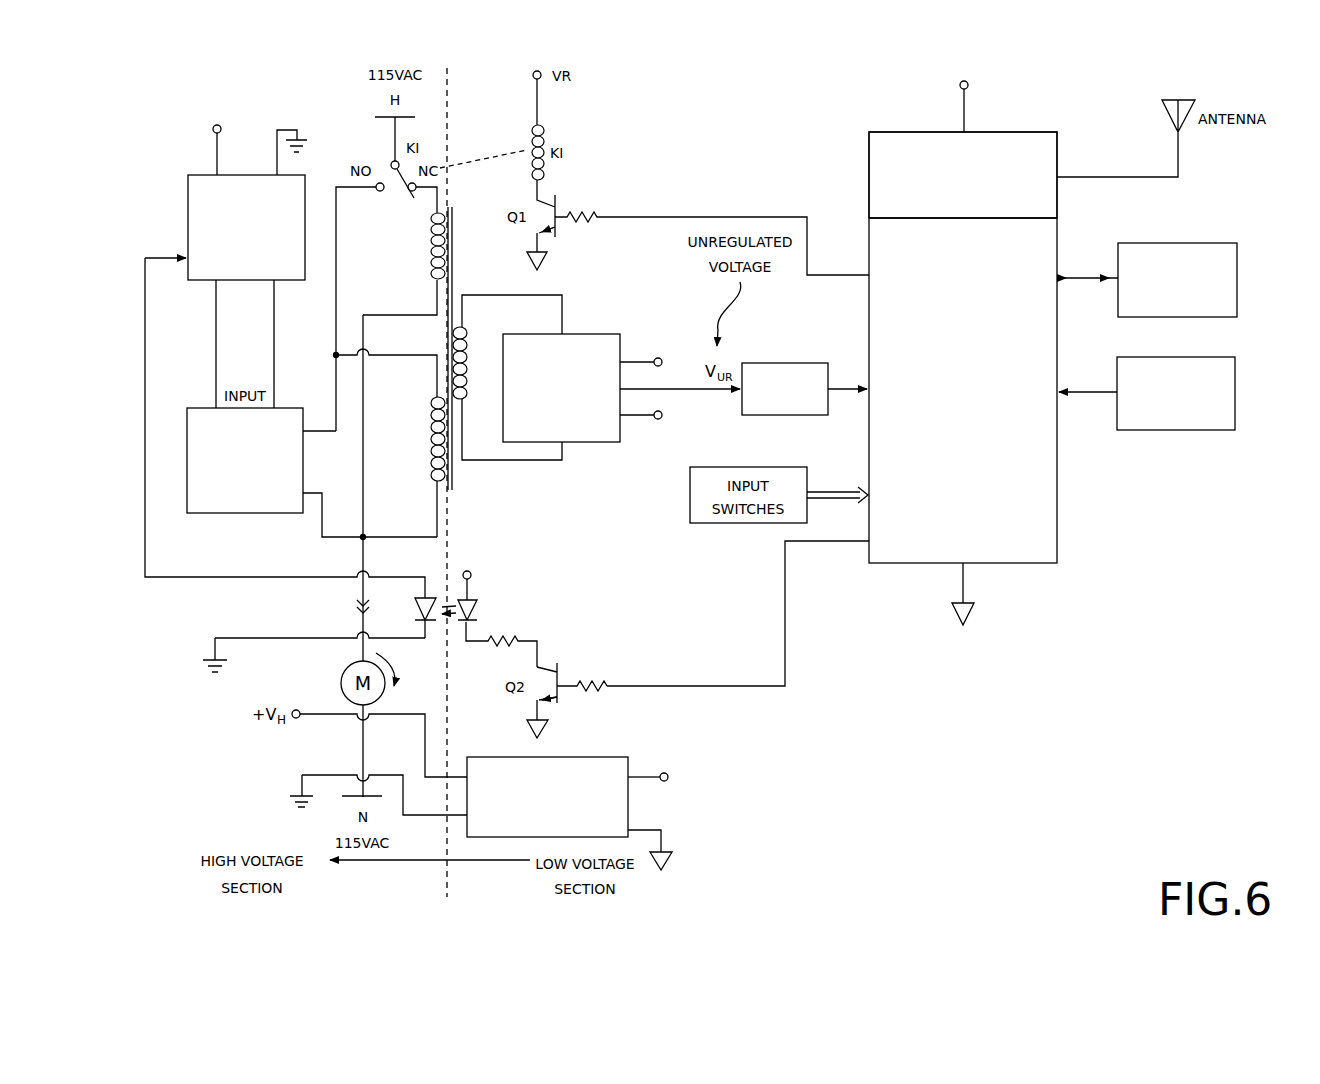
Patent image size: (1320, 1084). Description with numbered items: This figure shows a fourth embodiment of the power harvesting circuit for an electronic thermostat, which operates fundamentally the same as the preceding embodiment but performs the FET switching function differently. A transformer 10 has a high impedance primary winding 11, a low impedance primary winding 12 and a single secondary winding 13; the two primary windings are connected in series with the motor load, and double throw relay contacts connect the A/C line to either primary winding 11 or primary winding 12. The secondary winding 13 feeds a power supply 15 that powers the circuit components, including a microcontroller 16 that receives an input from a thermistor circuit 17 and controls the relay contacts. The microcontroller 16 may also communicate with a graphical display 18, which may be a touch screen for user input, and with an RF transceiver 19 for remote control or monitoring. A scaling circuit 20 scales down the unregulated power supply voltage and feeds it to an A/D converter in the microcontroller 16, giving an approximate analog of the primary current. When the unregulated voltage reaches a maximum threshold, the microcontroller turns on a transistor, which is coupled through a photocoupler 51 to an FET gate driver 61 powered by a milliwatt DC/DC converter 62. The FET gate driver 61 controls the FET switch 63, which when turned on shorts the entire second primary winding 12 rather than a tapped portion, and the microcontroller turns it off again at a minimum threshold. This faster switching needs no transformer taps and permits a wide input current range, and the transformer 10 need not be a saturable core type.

The transformer 10 is at (488, 496).
The high impedance primary winding 11 is at (433, 252).
The low impedance primary winding 12 is at (433, 463).
The secondary winding 13 is at (467, 360).
The power supply 15 is at (597, 334).
The microcontroller 16 is at (868, 410).
The thermistor circuit 17 is at (1175, 430).
The graphical display 18 is at (1178, 243).
The RF transceiver 19 is at (869, 165).
The scaling circuit 20 is at (787, 363).
The photocoupler 51 is at (478, 611).
The FET gate driver 61 is at (188, 226).
The milliwatt DC/DC converter 62 is at (598, 757).
The FET switch 63 is at (243, 514).